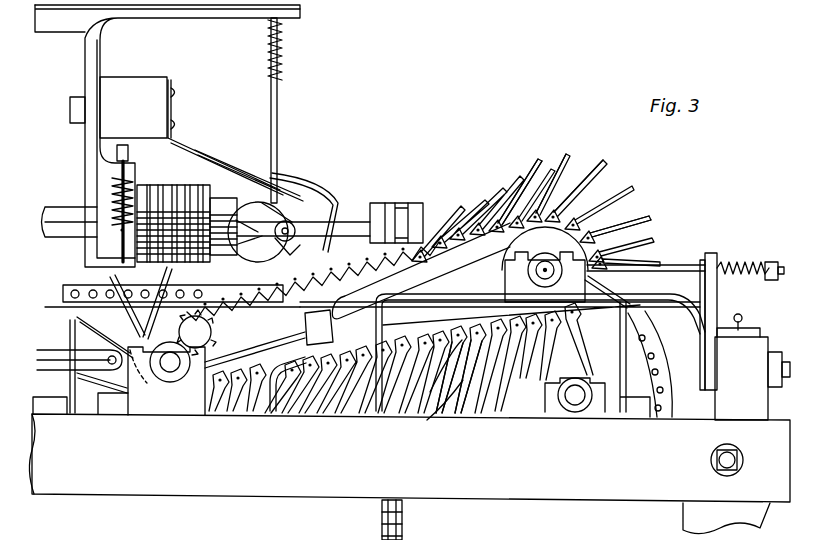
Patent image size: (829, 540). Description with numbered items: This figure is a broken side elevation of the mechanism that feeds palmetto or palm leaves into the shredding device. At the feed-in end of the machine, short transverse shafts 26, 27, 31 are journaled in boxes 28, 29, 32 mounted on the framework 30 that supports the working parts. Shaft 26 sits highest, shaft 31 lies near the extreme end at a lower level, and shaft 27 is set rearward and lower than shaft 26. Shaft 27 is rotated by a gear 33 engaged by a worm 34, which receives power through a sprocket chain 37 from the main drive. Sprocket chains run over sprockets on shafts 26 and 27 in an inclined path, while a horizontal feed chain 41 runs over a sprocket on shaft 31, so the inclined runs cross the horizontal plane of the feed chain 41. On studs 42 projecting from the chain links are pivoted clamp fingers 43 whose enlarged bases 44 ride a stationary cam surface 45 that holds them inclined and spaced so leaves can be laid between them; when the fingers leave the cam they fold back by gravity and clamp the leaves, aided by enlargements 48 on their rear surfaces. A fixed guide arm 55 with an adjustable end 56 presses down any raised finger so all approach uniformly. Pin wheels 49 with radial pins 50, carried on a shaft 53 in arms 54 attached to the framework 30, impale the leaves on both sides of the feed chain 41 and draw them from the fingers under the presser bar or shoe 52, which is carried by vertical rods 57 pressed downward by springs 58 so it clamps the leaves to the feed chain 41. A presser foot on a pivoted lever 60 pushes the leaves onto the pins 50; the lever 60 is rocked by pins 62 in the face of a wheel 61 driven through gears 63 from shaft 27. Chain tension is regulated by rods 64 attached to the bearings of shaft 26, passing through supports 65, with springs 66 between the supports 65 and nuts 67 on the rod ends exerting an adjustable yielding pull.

The shaft 26 is at (545, 262).
The shaft 27 is at (178, 382).
The box 28 is at (500, 274).
The box 29 is at (142, 415).
The framework 30 is at (210, 14).
The shaft 31 is at (570, 410).
The box 32 is at (615, 415).
The gear 33 is at (267, 341).
The worm 34 is at (140, 175).
The sprocket chain 37 is at (403, 203).
The feed chain 41 is at (650, 352).
The fingers or studs 42 is at (425, 260).
The clamp fingers 43 is at (585, 168).
The enlarged bases 44 is at (430, 335).
The stationary cam surface 45 is at (629, 216).
The enlargements 48 is at (550, 170).
The pin wheels 49 is at (291, 222).
The pins 50 is at (372, 192).
The presser bar or shoe 52 is at (75, 285).
The shaft 53 is at (294, 249).
The arms 54 is at (247, 170).
The guide arm 55 is at (192, 152).
The end of guide arm 56 is at (332, 196).
The vertical rods 57 is at (124, 145).
The springs 58 is at (128, 160).
The lever 60 is at (335, 330).
The wheel 61 is at (103, 390).
The pins 62 is at (75, 335).
The gears 63 is at (212, 335).
The rods 64 is at (686, 262).
The supports 65 is at (718, 298).
The springs 66 is at (745, 262).
The nuts 67 is at (774, 282).